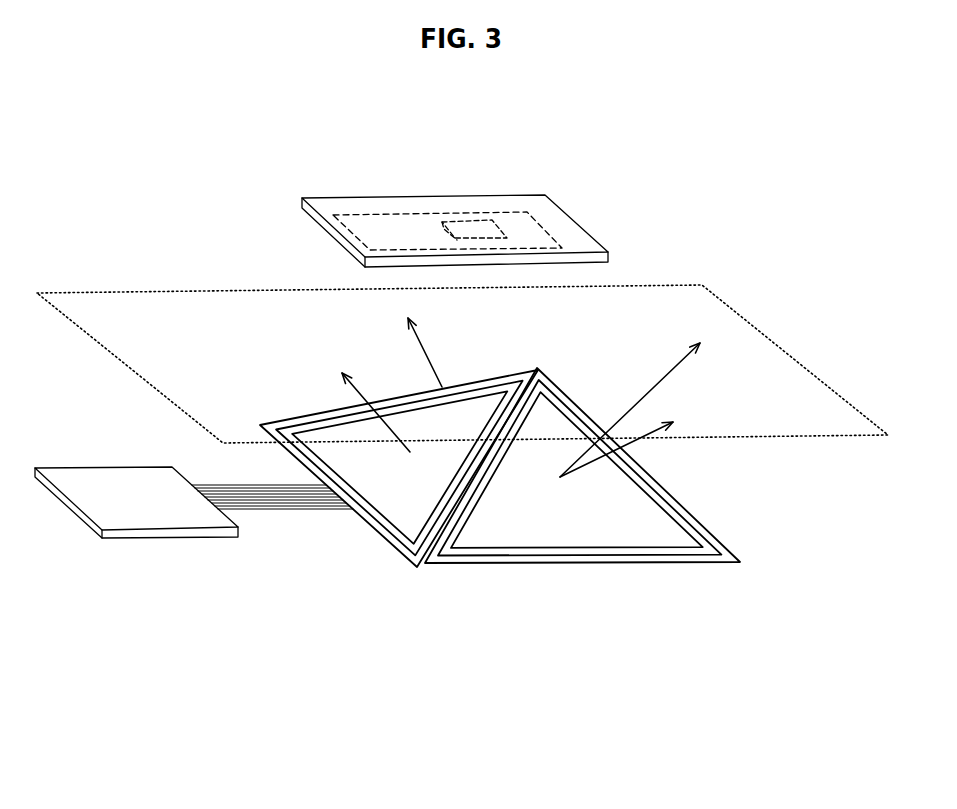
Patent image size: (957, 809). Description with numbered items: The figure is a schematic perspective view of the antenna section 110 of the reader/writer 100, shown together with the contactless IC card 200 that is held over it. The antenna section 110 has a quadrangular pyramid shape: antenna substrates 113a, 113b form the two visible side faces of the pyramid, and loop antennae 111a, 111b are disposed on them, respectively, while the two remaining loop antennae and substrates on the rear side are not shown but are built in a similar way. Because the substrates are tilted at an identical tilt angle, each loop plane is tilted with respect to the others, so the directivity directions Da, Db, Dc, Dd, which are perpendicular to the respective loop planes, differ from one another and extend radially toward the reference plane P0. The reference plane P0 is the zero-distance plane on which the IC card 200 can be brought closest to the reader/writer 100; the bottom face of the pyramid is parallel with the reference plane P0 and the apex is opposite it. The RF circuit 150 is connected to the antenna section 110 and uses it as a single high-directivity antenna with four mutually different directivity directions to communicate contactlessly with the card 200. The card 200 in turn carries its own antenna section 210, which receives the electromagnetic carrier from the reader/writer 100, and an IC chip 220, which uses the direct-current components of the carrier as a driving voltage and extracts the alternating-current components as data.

The reader/writer 100 is at (178, 647).
The antenna section 110 is at (500, 516).
The loop antenna 111a is at (582, 562).
The loop antenna 111b is at (353, 509).
The antenna substrate 113a is at (660, 565).
The antenna substrate 113b is at (387, 547).
The RF circuit 150 is at (157, 540).
The contactless IC card 200 is at (336, 198).
The antenna section 210 is at (410, 213).
The IC chip 220 is at (472, 222).
The reference plane P0 is at (797, 362).
The directivity direction Da is at (632, 444).
The directivity direction Db is at (358, 407).
The directivity direction Dc is at (417, 338).
The directivity direction Dd is at (636, 396).